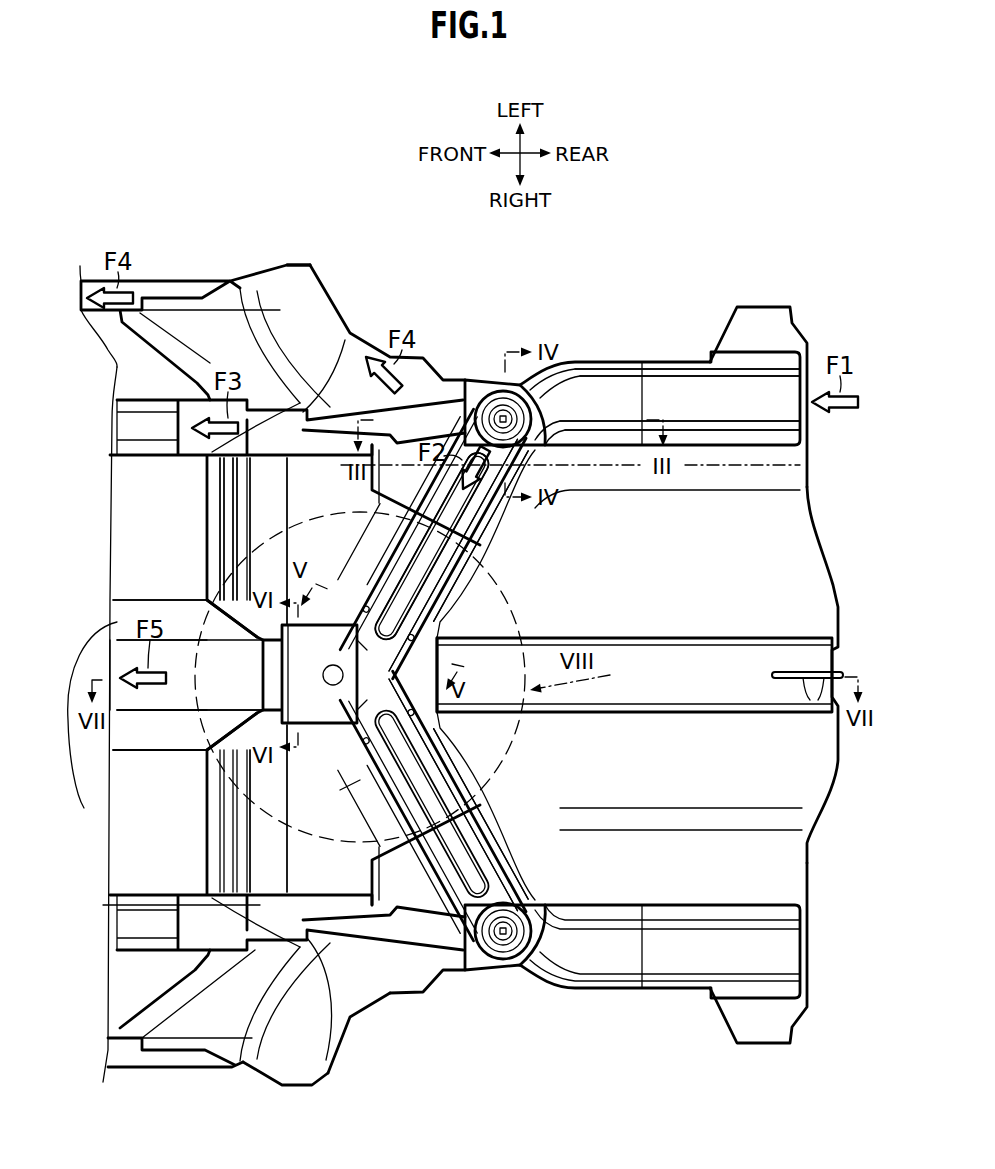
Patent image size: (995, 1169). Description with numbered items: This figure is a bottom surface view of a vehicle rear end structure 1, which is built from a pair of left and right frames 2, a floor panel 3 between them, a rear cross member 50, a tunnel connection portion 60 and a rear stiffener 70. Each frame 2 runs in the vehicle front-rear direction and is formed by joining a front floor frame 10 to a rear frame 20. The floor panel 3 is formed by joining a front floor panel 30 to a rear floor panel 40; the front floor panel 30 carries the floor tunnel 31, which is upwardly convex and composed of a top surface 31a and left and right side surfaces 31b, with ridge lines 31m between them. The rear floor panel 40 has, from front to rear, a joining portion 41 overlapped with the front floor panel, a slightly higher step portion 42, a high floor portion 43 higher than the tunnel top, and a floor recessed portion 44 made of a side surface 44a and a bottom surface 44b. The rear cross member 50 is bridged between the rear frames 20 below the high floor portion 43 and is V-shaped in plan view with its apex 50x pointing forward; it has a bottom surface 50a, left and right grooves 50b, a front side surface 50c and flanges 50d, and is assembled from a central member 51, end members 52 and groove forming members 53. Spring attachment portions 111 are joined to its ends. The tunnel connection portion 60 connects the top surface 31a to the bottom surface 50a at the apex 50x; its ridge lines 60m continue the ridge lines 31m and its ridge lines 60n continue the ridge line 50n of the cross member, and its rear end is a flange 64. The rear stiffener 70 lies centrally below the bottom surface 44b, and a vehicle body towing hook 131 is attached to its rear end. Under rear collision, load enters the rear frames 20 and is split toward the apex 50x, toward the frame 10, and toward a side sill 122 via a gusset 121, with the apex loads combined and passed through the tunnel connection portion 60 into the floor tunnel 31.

The vehicle rear end structure 1 is at (600, 286).
The frame 2 is at (148, 197).
The front floor frame 10 is at (140, 427).
The rear frame 20 is at (263, 427).
The floor panel 3 is at (305, 197).
The front floor panel 30 is at (300, 427).
The rear floor panel 40 is at (343, 350).
The joining portion 41 is at (300, 1045).
The step portion 42 is at (305, 1000).
The high floor portion 43 is at (368, 988).
The floor recessed portion 44 is at (775, 265).
The side surface of floor recessed portion 44a is at (690, 467).
The bottom surface of floor recessed portion 44b is at (747, 533).
The rear cross member 50 is at (560, 537).
The bottom surface of rear cross member 50a is at (327, 517).
The groove 50b is at (420, 767).
The front side surface of rear cross member 50c is at (293, 550).
The flange of rear cross member 50d is at (337, 512).
The ridge line of rear cross member 50n is at (353, 583).
The apex 50x is at (350, 790).
The central member 51 is at (420, 655).
The end member 52 is at (490, 505).
The groove forming member 53 is at (477, 563).
The tunnel connection portion 60 is at (263, 687).
The ridge line extending in front-rear direction 60m is at (260, 637).
The ridge line extending in left-right direction 60n is at (322, 675).
The flange 64 is at (360, 672).
The rear stiffener 70 is at (690, 670).
The spring attachment portion 111 is at (493, 400).
The gusset 121 is at (287, 287).
The side sill 122 is at (88, 278).
The vehicle body towing hook 131 is at (807, 680).
The floor tunnel 31 is at (200, 841).
The top surface of floor tunnel 31a is at (112, 747).
The side surface of floor tunnel 31b is at (88, 730).
The ridge line of floor tunnel 31m is at (170, 618).